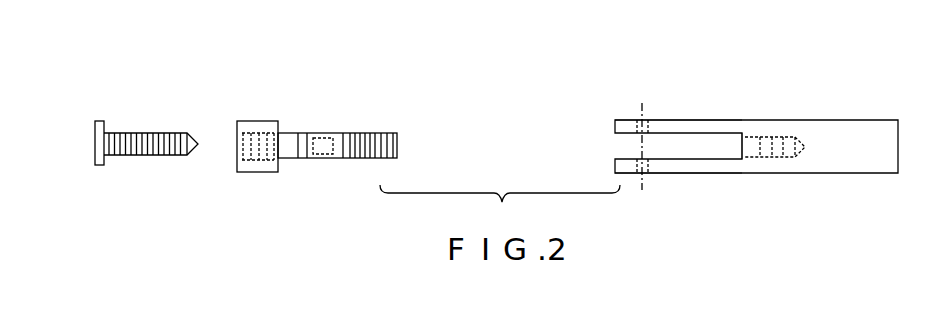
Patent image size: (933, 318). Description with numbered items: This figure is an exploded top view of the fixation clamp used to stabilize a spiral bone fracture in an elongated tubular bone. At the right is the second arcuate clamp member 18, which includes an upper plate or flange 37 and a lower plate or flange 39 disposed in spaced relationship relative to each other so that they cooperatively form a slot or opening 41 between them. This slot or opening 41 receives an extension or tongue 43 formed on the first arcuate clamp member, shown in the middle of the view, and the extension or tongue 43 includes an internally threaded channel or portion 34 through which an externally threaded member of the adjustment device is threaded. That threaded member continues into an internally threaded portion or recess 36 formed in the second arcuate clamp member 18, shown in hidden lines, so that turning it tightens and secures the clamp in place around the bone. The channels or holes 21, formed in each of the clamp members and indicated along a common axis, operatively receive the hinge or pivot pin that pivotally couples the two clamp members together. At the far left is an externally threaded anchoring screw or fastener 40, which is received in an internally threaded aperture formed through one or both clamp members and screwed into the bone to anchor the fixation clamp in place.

The second arcuate clamp member 18 is at (756, 145).
The channels or holes 21 is at (637, 117).
The internally threaded channel or portion 34 is at (327, 108).
The internally threaded portion or recess 36 is at (772, 136).
The upper plate or flange 37 is at (713, 120).
The lower plate or flange 39 is at (716, 173).
The externally threaded anchoring screw or fastener 40 is at (93, 127).
The slot or opening 41 is at (703, 141).
The extension or tongue 43 is at (385, 135).